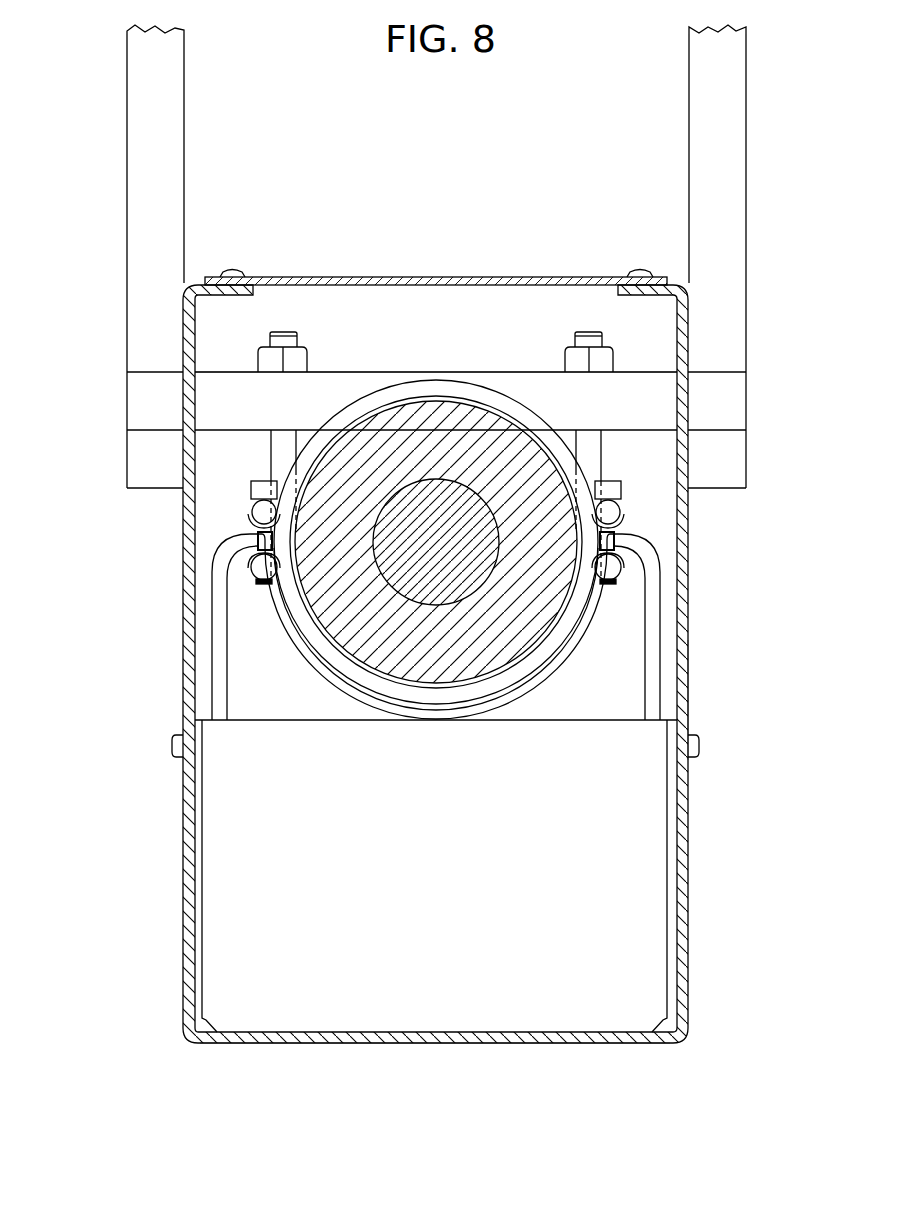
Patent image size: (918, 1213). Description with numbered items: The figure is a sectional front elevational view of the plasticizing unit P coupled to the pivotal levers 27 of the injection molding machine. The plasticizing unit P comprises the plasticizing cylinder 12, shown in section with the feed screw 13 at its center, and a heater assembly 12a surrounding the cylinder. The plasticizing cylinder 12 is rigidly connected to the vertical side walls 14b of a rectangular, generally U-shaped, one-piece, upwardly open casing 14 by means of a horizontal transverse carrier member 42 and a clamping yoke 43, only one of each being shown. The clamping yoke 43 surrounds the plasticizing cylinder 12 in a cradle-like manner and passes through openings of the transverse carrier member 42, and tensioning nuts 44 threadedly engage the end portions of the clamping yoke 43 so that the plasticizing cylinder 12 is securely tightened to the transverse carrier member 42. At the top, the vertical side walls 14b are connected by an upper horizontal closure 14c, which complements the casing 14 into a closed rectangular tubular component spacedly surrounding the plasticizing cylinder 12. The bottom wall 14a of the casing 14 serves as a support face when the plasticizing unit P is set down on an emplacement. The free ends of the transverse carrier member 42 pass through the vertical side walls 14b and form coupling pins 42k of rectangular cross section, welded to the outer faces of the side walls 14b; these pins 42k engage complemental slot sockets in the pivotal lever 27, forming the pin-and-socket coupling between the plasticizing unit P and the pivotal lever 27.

The plasticizing cylinder 12 is at (510, 620).
The heater assembly 12a is at (348, 418).
The feed screw 13 is at (430, 566).
The casing 14 is at (480, 662).
The bottom wall 14a is at (530, 1045).
The vertical side walls 14b is at (690, 697).
The upper horizontal closure 14c is at (505, 277).
The pivotal lever 27 is at (150, 125).
The transverse carrier member 42 is at (550, 390).
The coupling pins 42k is at (710, 400).
The clamping yoke 43 is at (590, 455).
The tensioning nuts 44 is at (600, 362).
The plasticizing unit P is at (340, 277).